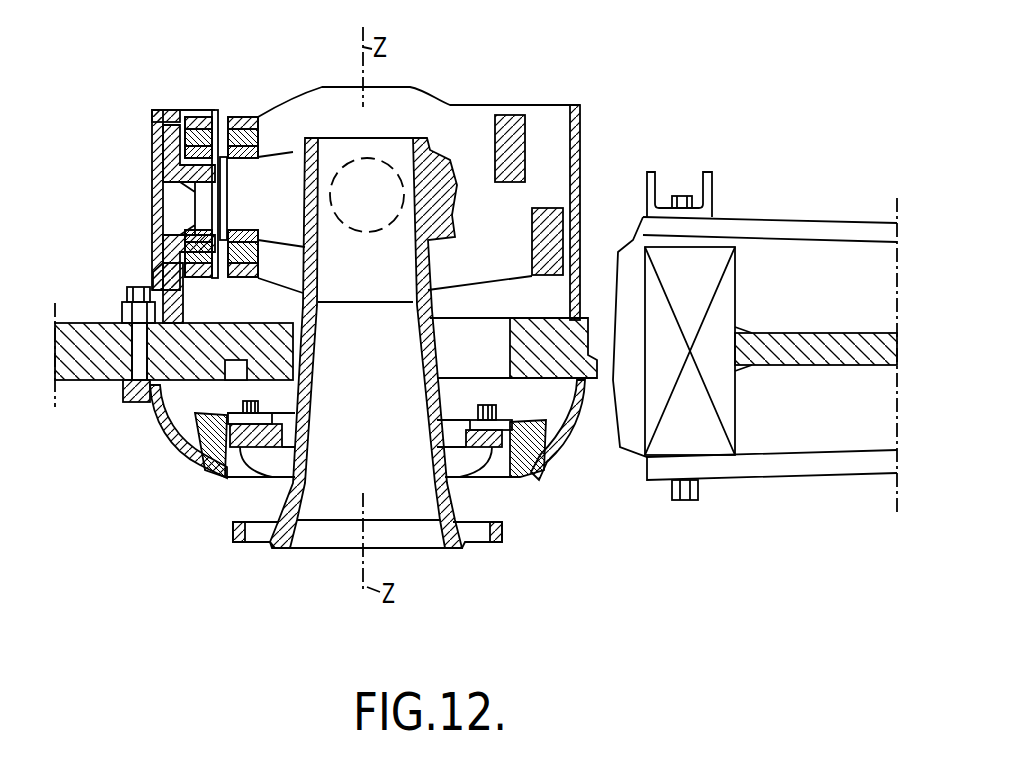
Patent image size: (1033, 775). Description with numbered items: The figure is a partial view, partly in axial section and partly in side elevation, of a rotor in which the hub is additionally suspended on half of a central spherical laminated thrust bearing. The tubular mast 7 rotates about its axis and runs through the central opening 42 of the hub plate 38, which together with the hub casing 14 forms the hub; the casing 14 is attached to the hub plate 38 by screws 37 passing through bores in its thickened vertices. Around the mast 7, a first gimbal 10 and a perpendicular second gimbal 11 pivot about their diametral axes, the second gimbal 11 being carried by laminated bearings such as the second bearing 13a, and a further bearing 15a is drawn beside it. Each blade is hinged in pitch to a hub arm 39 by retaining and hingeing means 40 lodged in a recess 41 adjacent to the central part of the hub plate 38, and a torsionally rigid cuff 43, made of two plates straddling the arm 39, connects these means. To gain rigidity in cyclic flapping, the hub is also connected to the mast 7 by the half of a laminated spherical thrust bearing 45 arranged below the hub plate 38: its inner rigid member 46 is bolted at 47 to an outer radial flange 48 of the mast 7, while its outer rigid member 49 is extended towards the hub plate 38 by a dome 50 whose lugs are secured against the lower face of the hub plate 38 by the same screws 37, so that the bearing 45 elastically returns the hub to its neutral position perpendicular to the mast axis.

The mast 7 is at (295, 513).
The first gimbal 10 is at (512, 140).
The second gimbal 11 is at (552, 222).
The second bearing 13a is at (245, 118).
The hub casing 14 is at (575, 157).
The bearing 15a is at (196, 118).
The screws 37 is at (140, 320).
The hub plate 38 is at (95, 362).
The arm 39 is at (825, 350).
The retaining and hingeing means 40 is at (700, 427).
The recess 41 is at (598, 363).
The central opening 42 is at (247, 360).
The cuff 43 is at (785, 227).
The central laminated spherical thrust bearing 45 is at (213, 452).
The inner rigid member 46 is at (538, 418).
The bolt 47 is at (480, 413).
The outer radial flange 48 is at (478, 437).
The outer rigid member 49 is at (537, 463).
The dome 50 is at (160, 414).